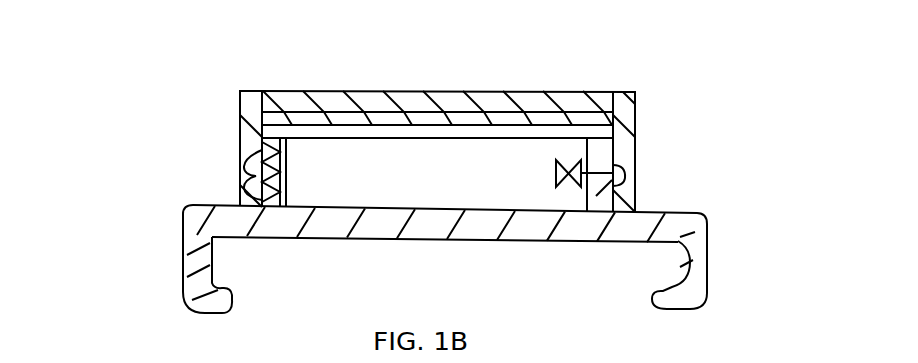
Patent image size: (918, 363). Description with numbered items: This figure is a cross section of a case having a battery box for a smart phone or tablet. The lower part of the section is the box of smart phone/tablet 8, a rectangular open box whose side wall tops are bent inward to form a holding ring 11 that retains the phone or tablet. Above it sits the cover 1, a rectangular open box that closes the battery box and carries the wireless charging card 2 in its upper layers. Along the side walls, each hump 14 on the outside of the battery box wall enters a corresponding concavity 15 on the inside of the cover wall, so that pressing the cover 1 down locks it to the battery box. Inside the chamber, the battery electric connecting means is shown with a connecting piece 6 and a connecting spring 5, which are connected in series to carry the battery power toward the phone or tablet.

The cover 1 is at (478, 95).
The wireless charging card 2 is at (585, 103).
The connecting spring 5 is at (585, 152).
The connecting piece 6 is at (289, 149).
The box of smart phone/tablet 8 is at (640, 231).
The holding ring 11 is at (668, 300).
The hump 14 is at (238, 150).
The concavity 15 is at (237, 177).